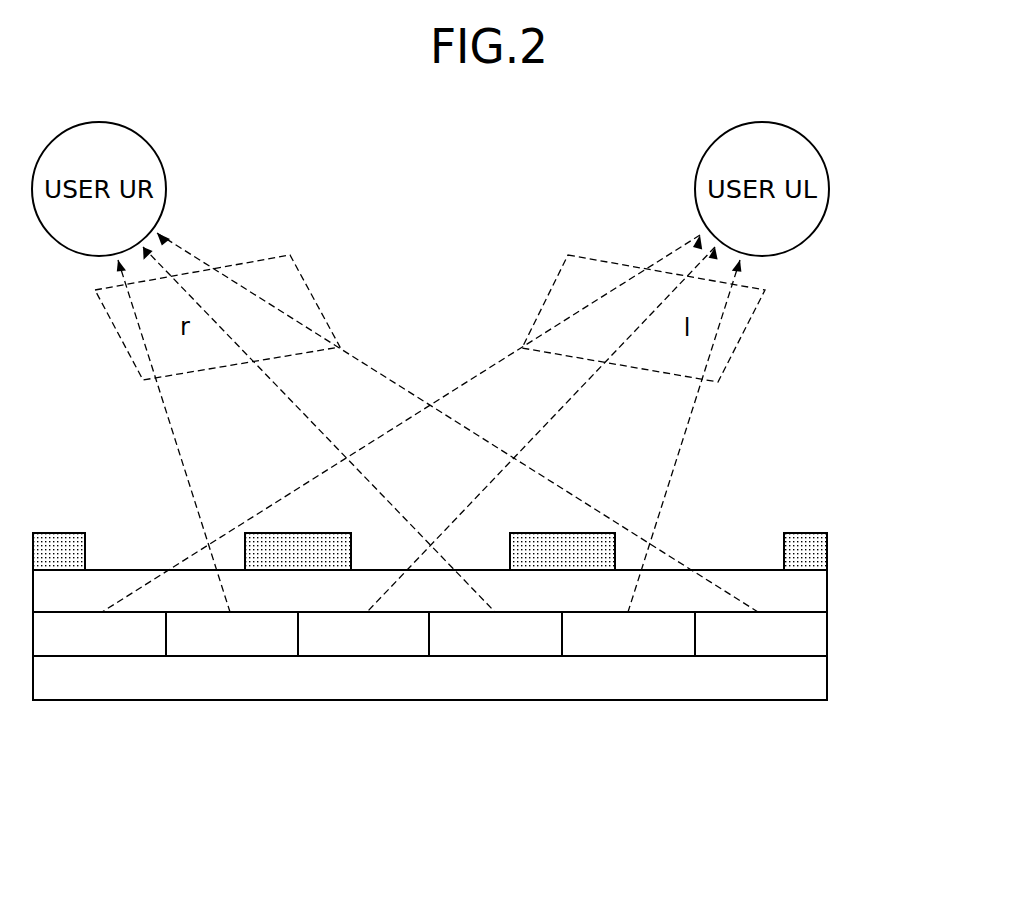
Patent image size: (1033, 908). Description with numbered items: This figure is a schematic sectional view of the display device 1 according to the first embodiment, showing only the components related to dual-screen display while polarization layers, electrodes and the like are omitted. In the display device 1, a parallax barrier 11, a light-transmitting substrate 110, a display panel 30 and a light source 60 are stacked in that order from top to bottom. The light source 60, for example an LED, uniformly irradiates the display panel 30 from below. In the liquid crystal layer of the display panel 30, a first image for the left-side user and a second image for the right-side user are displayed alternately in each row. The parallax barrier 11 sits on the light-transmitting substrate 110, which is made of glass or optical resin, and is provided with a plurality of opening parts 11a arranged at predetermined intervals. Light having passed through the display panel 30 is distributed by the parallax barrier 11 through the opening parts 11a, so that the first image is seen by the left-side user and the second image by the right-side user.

The display device 1 is at (427, 812).
The parallax barrier 11 is at (813, 550).
The opening parts 11a is at (784, 552).
The light-transmitting substrate 110 is at (813, 587).
The display panel 30 is at (813, 632).
The light source 60 is at (813, 676).